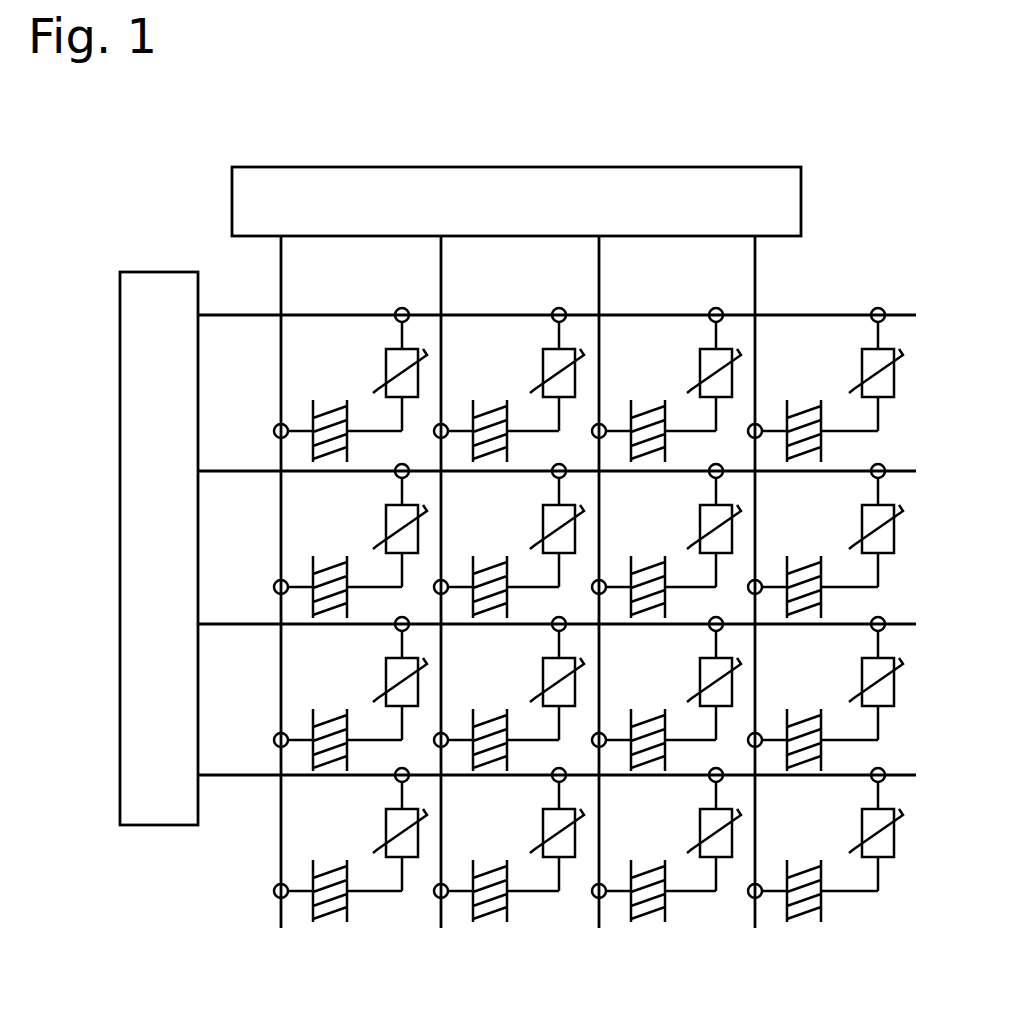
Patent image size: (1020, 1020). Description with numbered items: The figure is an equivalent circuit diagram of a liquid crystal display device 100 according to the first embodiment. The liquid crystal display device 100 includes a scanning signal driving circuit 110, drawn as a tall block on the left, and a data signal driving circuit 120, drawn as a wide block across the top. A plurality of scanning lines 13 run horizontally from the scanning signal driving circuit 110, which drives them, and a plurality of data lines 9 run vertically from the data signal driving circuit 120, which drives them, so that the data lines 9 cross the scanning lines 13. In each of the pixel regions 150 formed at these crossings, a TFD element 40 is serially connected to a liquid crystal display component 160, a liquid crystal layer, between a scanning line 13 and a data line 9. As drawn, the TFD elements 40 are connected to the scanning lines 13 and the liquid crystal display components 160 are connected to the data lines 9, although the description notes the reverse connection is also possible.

The liquid crystal display device 100 is at (856, 273).
The scanning signal driving circuit 110 is at (160, 271).
The data signal driving circuit 120 is at (516, 167).
The data line 9 is at (281, 296).
The scanning line 13 is at (235, 790).
The TFD element 40 is at (412, 857).
The pixel region 150 is at (756, 932).
The liquid crystal display component 160 is at (330, 918).